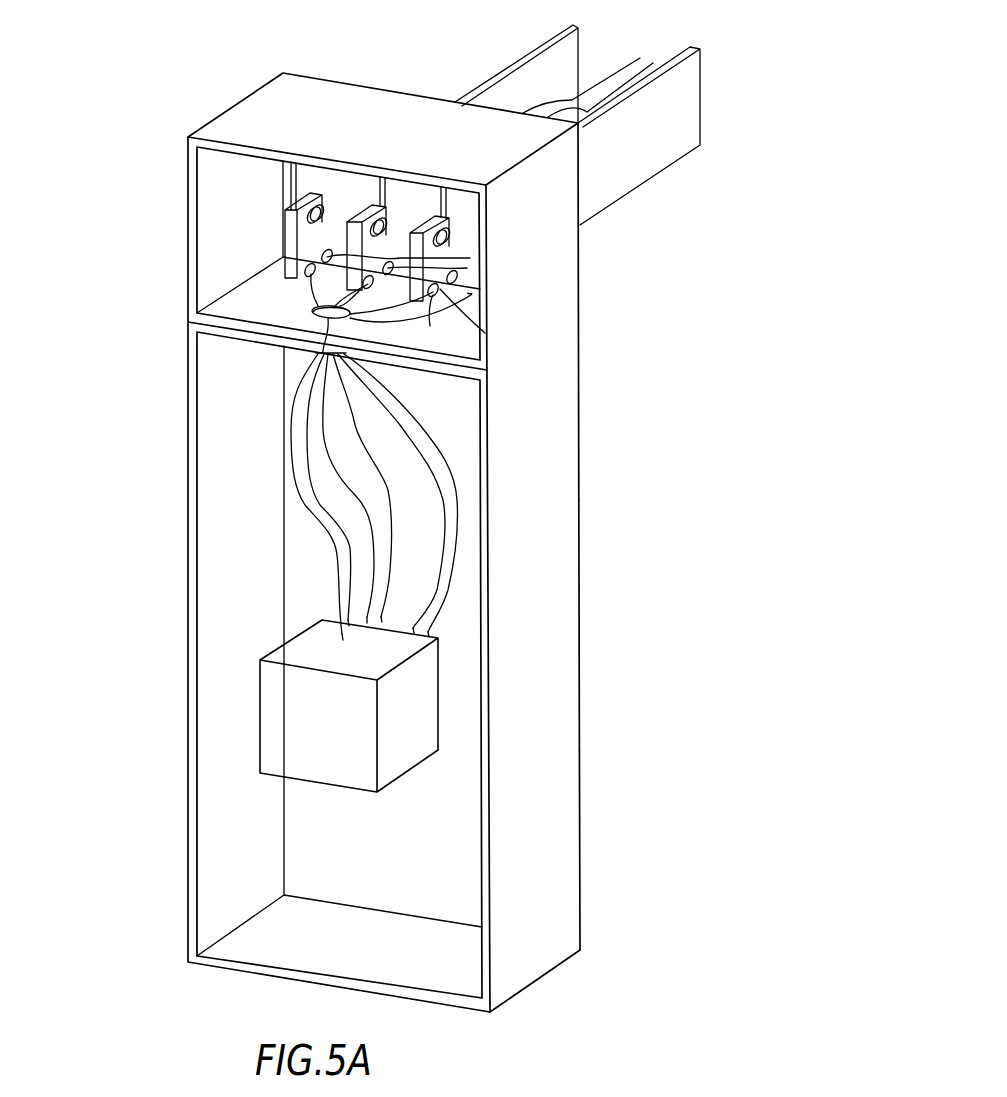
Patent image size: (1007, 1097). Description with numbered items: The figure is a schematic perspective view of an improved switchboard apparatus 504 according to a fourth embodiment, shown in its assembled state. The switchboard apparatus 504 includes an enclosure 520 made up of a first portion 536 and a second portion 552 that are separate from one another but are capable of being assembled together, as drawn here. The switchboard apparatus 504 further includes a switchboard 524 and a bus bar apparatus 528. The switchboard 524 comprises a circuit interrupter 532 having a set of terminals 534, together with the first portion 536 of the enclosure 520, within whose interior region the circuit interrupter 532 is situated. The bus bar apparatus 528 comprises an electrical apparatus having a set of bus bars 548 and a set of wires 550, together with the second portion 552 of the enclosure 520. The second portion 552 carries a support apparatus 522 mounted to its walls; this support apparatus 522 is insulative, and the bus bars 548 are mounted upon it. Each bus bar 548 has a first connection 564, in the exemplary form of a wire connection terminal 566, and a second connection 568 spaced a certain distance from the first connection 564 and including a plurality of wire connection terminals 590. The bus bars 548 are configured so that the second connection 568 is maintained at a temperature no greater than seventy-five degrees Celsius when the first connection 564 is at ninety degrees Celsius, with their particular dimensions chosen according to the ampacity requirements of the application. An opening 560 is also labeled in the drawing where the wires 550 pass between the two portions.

The switchboard apparatus 504 is at (445, 542).
The enclosure 520 is at (586, 644).
The support apparatus 522 is at (230, 302).
The switchboard 524 is at (586, 722).
The bus bar apparatus 528 is at (368, 203).
The circuit interrupter 532 is at (337, 790).
The set of terminals 534 is at (398, 626).
The first portion 536 is at (583, 262).
The bus bars 548 is at (284, 210).
The set of wires 550 is at (353, 437).
The second portion 552 is at (583, 830).
The cable opening 560 is at (367, 337).
The first connection 564 is at (290, 203).
The wire connection terminal 566 is at (311, 207).
The second connection 568 is at (287, 262).
The wire connection terminals 590 is at (314, 303).